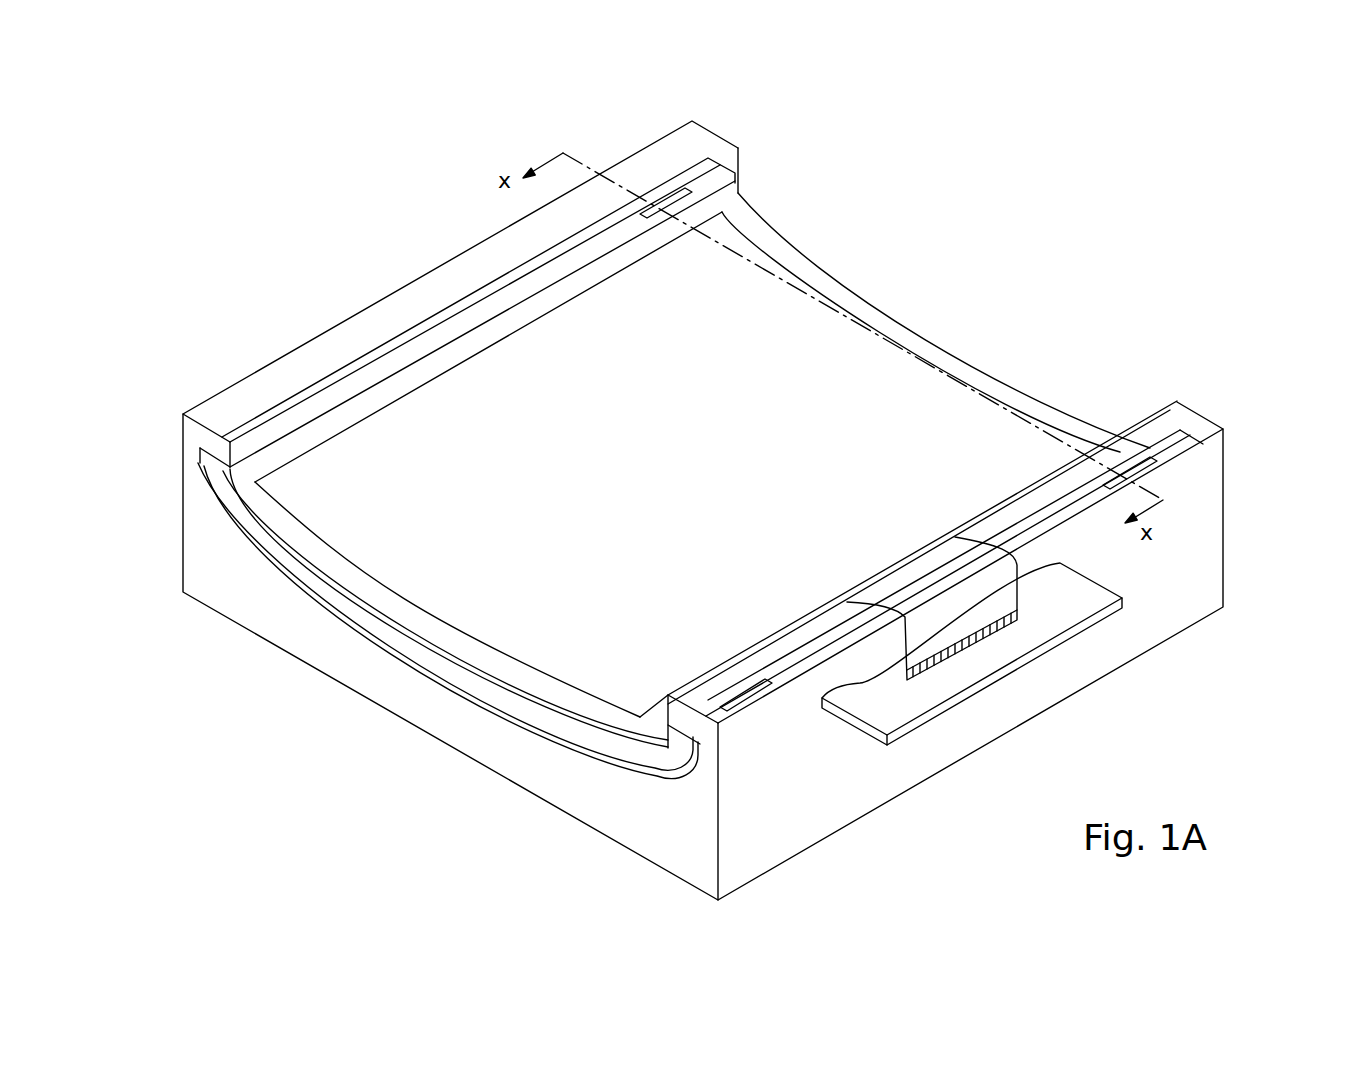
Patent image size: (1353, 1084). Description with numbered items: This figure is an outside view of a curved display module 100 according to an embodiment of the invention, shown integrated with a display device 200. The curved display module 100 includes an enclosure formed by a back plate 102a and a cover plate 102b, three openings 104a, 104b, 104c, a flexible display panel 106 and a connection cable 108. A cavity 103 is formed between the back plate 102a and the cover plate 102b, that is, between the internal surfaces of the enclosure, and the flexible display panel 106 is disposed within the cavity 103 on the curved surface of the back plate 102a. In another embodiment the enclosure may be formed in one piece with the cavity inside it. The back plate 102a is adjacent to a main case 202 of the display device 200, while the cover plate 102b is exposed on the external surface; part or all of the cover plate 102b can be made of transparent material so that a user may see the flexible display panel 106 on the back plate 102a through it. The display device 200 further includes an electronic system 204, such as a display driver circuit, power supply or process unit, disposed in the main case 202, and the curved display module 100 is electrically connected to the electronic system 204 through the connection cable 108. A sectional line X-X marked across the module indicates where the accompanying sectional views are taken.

The curved display module 100 is at (825, 240).
The back plate 102a is at (486, 704).
The cover plate 102b is at (356, 604).
The cavity 103 is at (214, 492).
The opening 104a is at (663, 206).
The opening 104b is at (1127, 473).
The opening 104c is at (752, 695).
The flexible display panel 106 is at (852, 315).
The connection cable 108 is at (1012, 545).
The display device 200 is at (201, 350).
The main case 202 is at (313, 338).
The electronic system 204 is at (1095, 628).